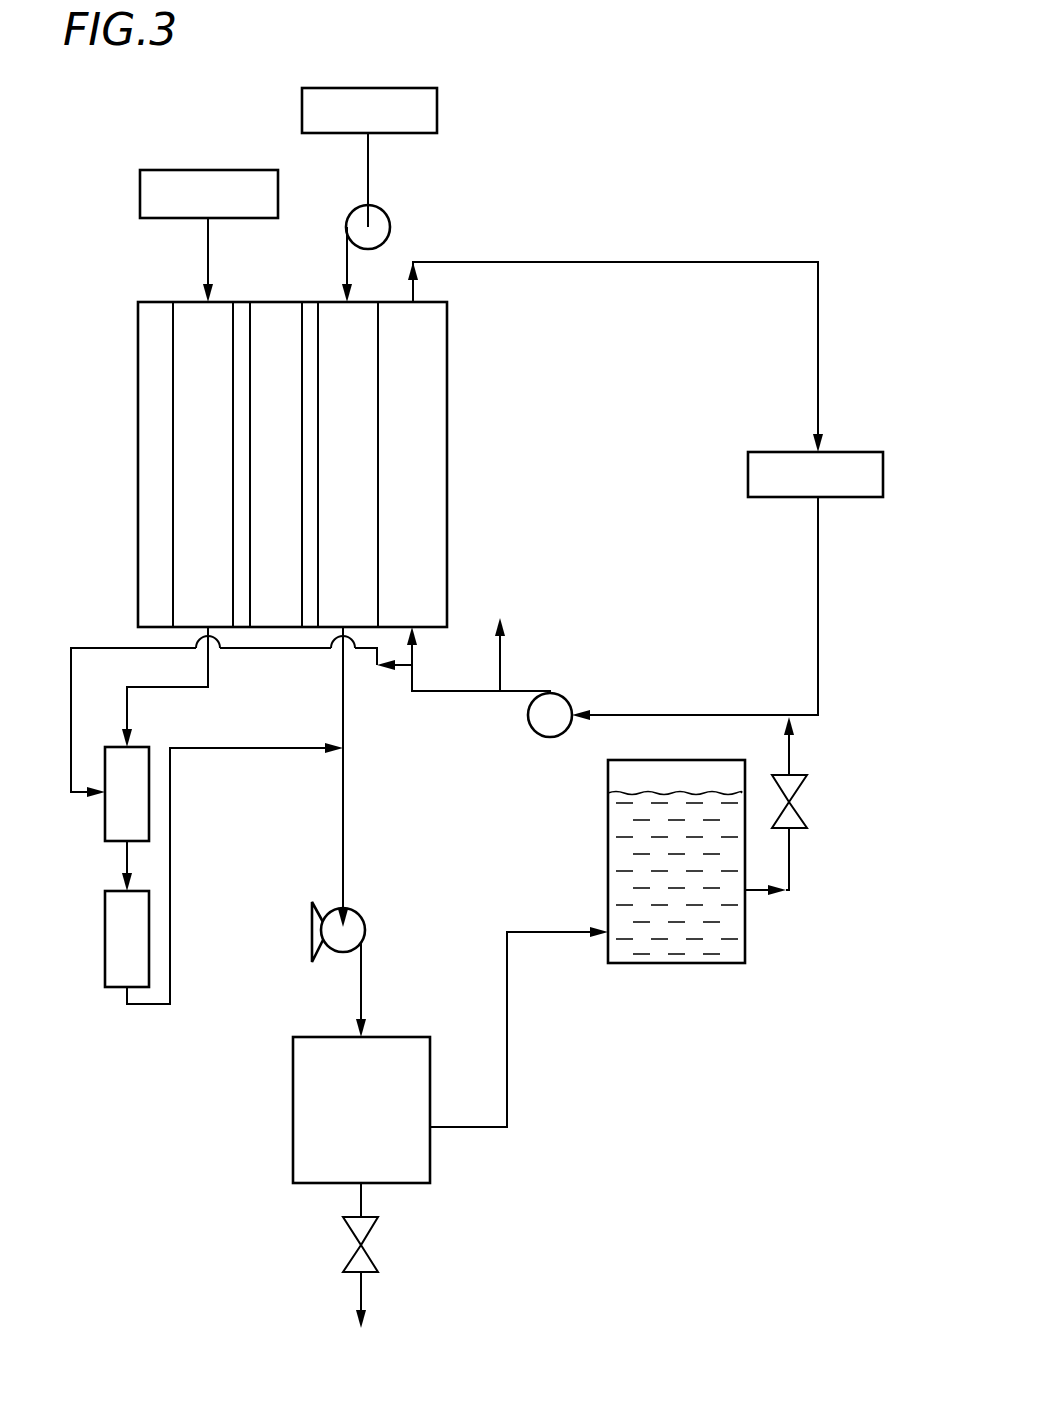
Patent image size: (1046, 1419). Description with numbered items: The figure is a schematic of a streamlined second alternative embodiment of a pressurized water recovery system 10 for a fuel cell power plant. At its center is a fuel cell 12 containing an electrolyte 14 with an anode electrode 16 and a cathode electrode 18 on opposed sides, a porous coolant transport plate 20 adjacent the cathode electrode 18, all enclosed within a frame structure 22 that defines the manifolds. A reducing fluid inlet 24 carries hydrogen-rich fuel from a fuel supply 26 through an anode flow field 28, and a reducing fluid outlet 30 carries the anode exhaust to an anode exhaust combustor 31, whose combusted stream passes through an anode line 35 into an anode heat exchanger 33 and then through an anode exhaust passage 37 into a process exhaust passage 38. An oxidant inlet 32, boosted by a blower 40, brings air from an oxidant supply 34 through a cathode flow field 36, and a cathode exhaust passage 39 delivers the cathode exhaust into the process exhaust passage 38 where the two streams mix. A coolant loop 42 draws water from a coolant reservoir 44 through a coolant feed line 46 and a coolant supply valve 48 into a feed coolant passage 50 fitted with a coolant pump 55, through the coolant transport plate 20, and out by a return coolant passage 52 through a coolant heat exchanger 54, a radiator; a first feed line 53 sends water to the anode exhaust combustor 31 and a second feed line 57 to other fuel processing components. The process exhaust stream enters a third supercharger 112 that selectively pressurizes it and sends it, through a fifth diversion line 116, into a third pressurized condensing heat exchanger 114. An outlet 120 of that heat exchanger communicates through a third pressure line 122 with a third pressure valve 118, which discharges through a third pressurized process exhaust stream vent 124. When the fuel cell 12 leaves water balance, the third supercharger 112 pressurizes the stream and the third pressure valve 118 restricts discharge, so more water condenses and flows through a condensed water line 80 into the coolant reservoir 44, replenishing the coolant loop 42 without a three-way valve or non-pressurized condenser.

The pressurized water recovery system 10 is at (628, 198).
The fuel cell 12 is at (270, 122).
The electrolyte 14 is at (265, 330).
The anode electrode 16 is at (243, 318).
The cathode electrode 18 is at (318, 335).
The porous coolant transport plate 20 is at (425, 355).
The frame structure 22 is at (150, 520).
The reducing fluid inlet 24 is at (208, 248).
The fuel supply 26 is at (237, 175).
The anode flow field 28 is at (202, 423).
The reducing fluid outlet 30 is at (208, 655).
The anode exhaust combustor 31 is at (120, 755).
The oxidant inlet 32 is at (347, 258).
The anode heat exchanger 33 is at (115, 962).
The oxidant supply 34 is at (437, 112).
The anode line 35 is at (125, 850).
The cathode flow field 36 is at (360, 510).
The anode exhaust passage 37 is at (172, 795).
The process exhaust passage 38 is at (343, 788).
The cathode exhaust passage 39 is at (343, 690).
The blower 40 is at (390, 227).
The coolant loop 42 is at (740, 680).
The coolant reservoir 44 is at (722, 950).
The coolant feed line 46 is at (789, 875).
The coolant supply valve 48 is at (805, 790).
The feed coolant passage 50 is at (625, 715).
The return coolant passage 52 is at (683, 262).
The first feed line 53 is at (105, 648).
The coolant heat exchanger 54 is at (845, 460).
The coolant pump 55 is at (566, 696).
The second feed line 57 is at (500, 655).
The condensed water line 80 is at (507, 972).
The third supercharger 112 is at (360, 912).
The third pressurized condensing heat exchanger 114 is at (305, 1113).
The fifth diversion line 116 is at (361, 985).
The third pressure valve 118 is at (372, 1232).
The outlet 120 is at (355, 1185).
The third pressure line 122 is at (365, 1198).
The third pressurized process exhaust stream vent 124 is at (358, 1288).